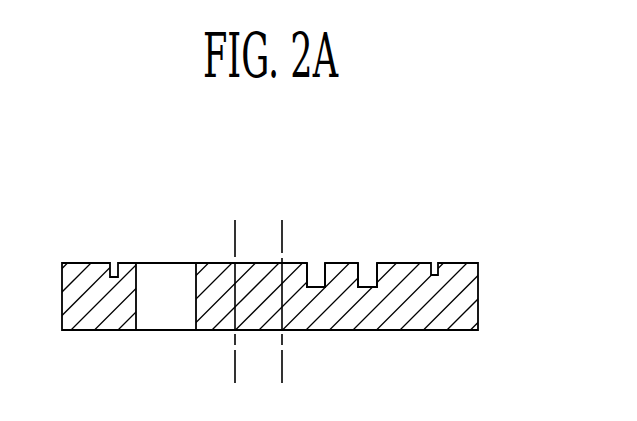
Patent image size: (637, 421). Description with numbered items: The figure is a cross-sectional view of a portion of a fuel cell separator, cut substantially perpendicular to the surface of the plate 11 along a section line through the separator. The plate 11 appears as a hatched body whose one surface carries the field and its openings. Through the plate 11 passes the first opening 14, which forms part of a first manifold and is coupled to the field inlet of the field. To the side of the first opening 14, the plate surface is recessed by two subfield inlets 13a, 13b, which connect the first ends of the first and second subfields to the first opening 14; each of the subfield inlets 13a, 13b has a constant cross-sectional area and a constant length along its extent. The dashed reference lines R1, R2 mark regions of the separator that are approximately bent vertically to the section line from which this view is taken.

The plate 11 is at (476, 298).
The first opening 14 is at (166, 277).
The subfield inlet 13a is at (317, 274).
The subfield inlet 13b is at (369, 274).
The region R1 is at (235, 284).
The region R2 is at (285, 284).